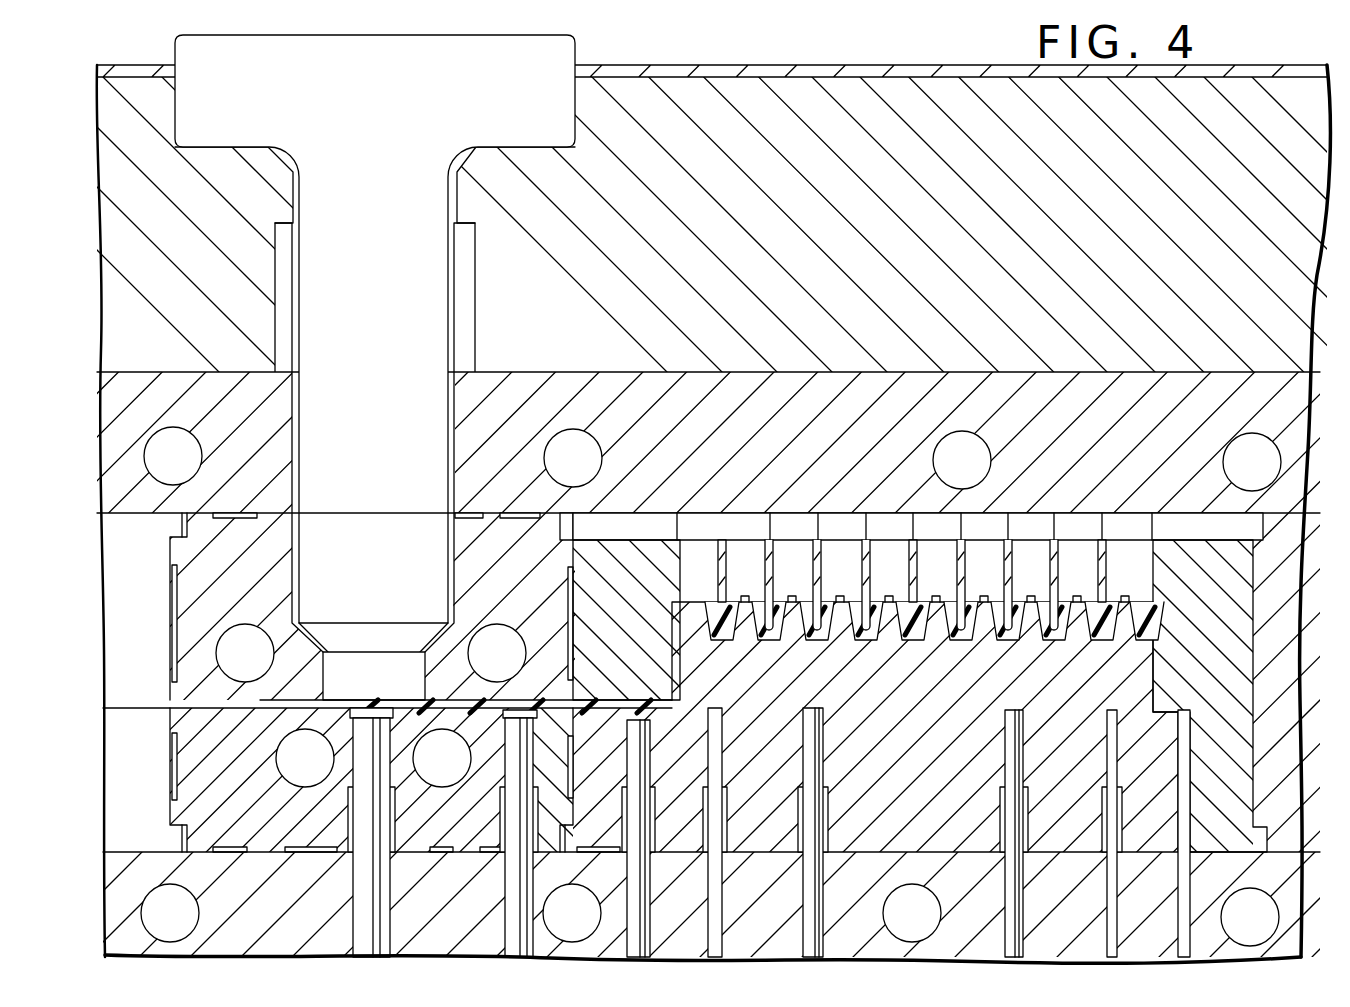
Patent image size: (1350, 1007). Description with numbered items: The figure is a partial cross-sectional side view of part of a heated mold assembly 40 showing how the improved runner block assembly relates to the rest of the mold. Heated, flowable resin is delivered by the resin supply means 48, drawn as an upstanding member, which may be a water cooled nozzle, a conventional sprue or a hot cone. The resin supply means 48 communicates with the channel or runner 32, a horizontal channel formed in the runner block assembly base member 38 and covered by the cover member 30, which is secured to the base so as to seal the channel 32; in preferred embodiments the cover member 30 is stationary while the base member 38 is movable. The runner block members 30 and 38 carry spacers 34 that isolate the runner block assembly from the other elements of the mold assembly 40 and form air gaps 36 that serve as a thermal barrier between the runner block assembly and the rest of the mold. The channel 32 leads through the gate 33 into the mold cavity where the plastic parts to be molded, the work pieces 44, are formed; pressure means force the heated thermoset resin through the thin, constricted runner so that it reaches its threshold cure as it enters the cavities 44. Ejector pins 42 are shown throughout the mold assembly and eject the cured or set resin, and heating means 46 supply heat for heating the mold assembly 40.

The runner block assembly cover member 30 is at (196, 590).
The channel or runner 32 is at (462, 702).
The gate 33 is at (673, 700).
The spacer plate 34 is at (205, 508).
The air gaps 36 is at (253, 512).
The runner block assembly base member 38 is at (228, 738).
The mold assembly 40 is at (906, 248).
The ejector pins 42 is at (507, 899).
The work pieces 44 is at (815, 645).
The heating means 46 is at (186, 441).
The resin supply means 48 is at (385, 323).